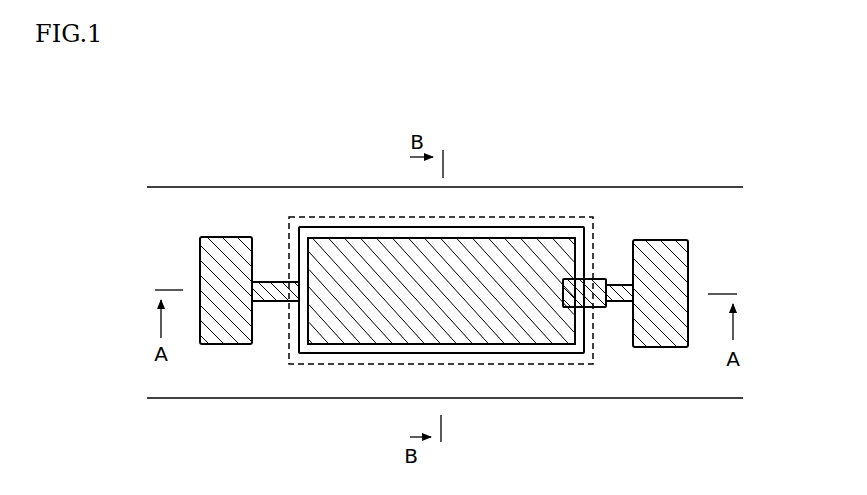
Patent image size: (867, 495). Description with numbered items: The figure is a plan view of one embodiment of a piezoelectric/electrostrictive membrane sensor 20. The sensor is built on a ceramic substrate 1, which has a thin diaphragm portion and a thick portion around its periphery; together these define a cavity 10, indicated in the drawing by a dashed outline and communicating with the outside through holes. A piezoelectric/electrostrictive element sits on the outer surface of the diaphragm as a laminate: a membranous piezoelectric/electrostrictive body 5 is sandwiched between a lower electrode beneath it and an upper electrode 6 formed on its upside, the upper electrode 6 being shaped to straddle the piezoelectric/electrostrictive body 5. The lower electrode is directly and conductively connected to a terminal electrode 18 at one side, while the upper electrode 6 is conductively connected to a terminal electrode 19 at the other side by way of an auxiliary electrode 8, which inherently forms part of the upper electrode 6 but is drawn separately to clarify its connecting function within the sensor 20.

The ceramic substrate 1 is at (710, 385).
The piezoelectric/electrostrictive body 5 is at (470, 232).
The upper electrode 6 is at (500, 257).
The auxiliary electrode 8 is at (600, 279).
The cavity 10 is at (557, 218).
The terminal electrode 18 is at (226, 243).
The terminal electrode 19 is at (663, 247).
The piezoelectric/electrostrictive membrane sensor 20 is at (722, 163).